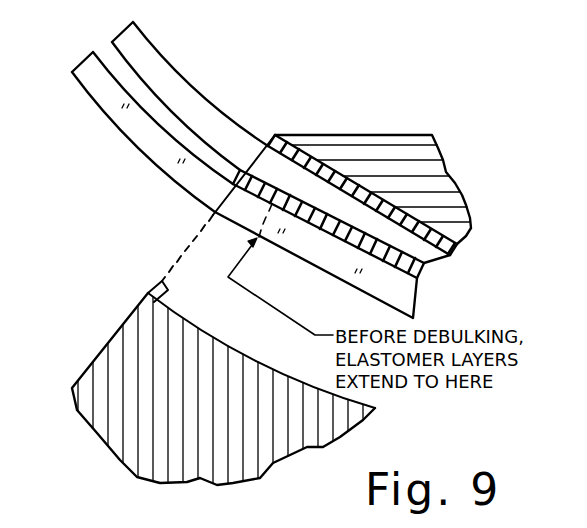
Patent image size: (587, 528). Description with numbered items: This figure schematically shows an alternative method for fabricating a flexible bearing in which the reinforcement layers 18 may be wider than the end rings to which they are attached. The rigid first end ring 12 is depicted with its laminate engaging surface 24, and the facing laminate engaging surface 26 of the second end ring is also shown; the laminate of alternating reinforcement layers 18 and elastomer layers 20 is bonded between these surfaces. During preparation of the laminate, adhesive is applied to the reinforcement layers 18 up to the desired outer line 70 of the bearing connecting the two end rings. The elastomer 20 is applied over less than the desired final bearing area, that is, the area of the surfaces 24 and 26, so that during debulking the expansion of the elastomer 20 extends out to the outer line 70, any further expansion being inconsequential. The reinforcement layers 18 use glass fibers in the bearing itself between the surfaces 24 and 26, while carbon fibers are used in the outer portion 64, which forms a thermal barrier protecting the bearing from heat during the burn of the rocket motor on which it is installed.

The outer portion 64 is at (113, 42).
The elastomer layers 20 is at (420, 272).
The reinforcement layers 18 is at (271, 160).
The laminate engaging surface 26 is at (458, 240).
The outer line 70 is at (186, 250).
The laminate engaging surface 24 is at (157, 282).
The first end ring 12 is at (110, 358).